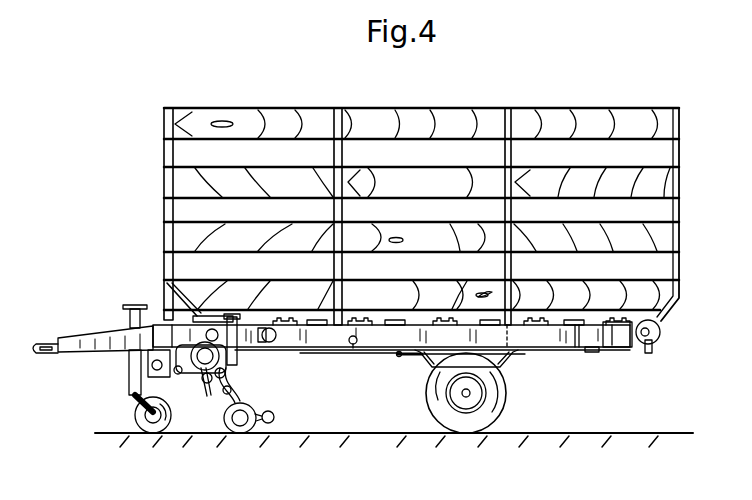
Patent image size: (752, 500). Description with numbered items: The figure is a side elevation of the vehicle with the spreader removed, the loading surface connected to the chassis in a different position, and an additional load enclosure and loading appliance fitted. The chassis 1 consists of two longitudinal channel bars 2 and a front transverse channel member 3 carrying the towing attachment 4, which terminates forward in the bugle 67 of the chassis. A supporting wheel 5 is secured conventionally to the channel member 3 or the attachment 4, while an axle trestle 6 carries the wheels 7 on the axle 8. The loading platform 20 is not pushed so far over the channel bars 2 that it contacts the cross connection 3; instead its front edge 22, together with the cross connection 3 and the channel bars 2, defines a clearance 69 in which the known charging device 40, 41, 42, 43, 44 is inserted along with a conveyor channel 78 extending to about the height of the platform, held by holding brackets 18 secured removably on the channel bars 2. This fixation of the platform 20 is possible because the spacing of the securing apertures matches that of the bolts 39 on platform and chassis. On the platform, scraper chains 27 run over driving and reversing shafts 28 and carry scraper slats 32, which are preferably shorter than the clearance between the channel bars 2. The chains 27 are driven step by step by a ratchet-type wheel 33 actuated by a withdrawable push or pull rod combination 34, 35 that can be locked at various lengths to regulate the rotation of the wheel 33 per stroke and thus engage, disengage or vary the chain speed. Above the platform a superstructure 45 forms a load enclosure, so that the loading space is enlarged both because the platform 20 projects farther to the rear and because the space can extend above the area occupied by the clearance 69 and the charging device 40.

The chassis 1 is at (118, 312).
The longitudinal channel bars 2 is at (576, 350).
The front transverse channel member 3 is at (163, 332).
The towing attachment 4 is at (88, 347).
The supporting wheel 5 is at (137, 377).
The axle trestle 6 is at (508, 365).
The wheels 7 is at (462, 432).
The axle 8 is at (470, 394).
The holding brackets 18 is at (201, 352).
The loading platform 20 is at (592, 352).
The front edge of the loading platform 22 is at (265, 328).
The scraper chains 27 is at (395, 318).
The driving and reversing shafts 28 is at (661, 340).
The scraper slats 32 is at (620, 350).
The ratchet-type wheel 33 is at (656, 352).
The push or pull rod 34 is at (333, 355).
The push or pull rod 35 is at (415, 357).
The bolts 39 is at (353, 345).
The charging device 40 is at (203, 347).
The charging device 41 is at (237, 333).
The charging device 42 is at (228, 410).
The charging device 43 is at (240, 433).
The charging device 44 is at (273, 414).
The superstructure 45 is at (423, 148).
The bugle of the chassis 67 is at (35, 355).
The clearance 69 is at (238, 355).
The conveyor channel 78 is at (268, 422).